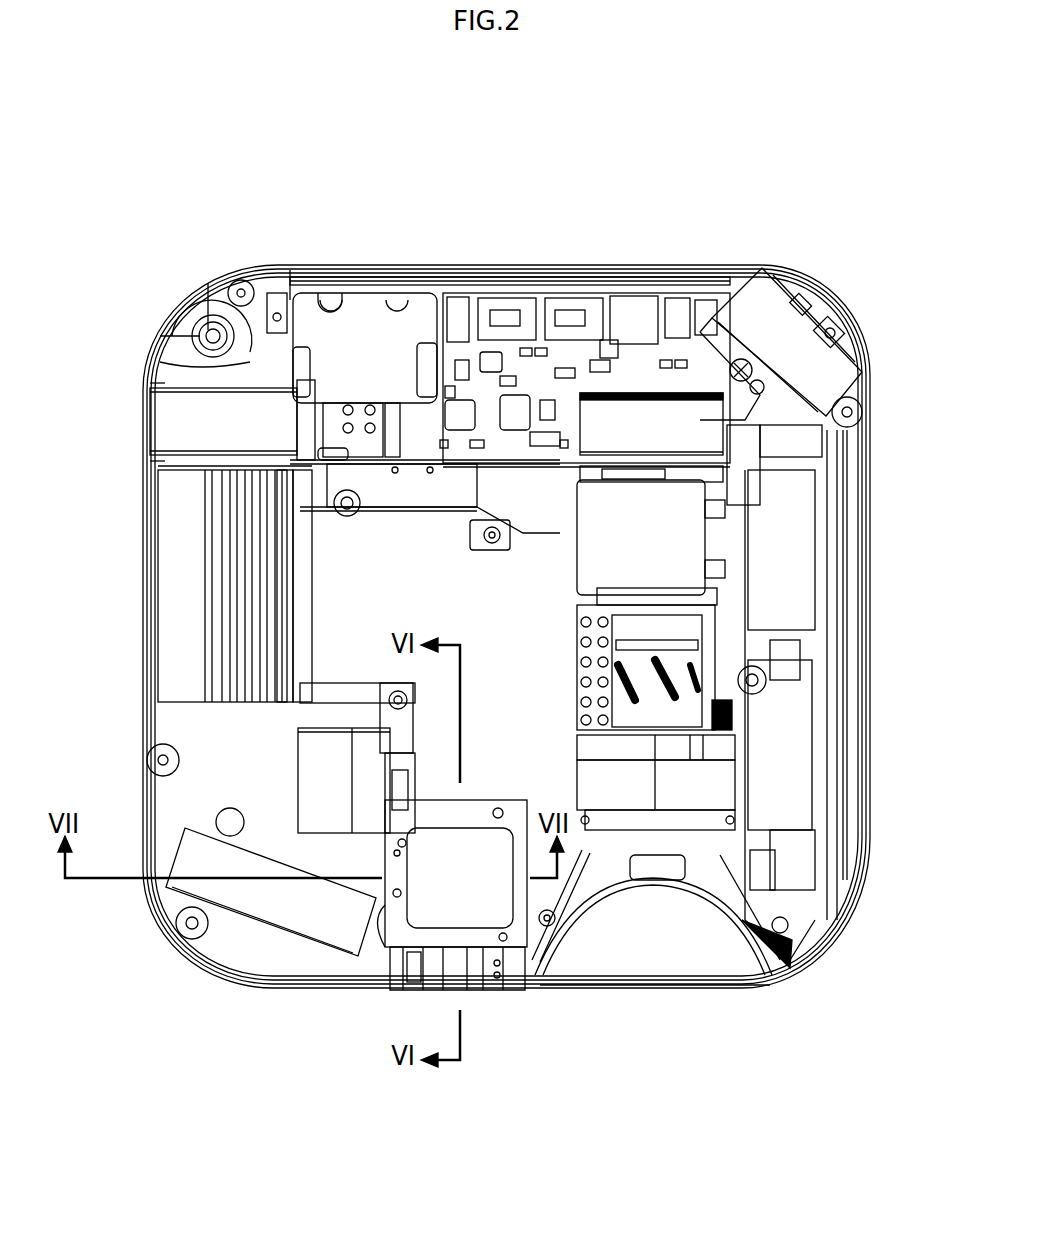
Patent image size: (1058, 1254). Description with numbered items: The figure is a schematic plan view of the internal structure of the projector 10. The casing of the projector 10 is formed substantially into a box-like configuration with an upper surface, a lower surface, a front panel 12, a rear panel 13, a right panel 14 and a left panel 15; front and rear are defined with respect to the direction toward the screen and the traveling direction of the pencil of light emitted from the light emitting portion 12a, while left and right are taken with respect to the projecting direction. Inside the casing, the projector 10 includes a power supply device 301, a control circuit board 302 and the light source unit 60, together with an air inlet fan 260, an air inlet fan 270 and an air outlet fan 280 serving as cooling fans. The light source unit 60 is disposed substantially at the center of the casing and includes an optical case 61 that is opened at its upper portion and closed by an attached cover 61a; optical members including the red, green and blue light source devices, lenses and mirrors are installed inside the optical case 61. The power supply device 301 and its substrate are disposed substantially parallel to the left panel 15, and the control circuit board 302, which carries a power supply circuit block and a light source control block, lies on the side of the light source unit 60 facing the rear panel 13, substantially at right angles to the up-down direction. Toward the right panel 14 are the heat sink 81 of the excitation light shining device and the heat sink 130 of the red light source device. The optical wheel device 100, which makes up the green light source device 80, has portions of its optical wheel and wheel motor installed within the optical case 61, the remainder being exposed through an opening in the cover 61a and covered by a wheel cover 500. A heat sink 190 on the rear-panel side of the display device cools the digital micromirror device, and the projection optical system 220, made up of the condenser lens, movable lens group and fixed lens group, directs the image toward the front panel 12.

The projector 10 is at (504, 550).
The front panel 12 is at (637, 970).
The light emitting portion 12a is at (655, 972).
The rear panel 13 is at (503, 235).
The right panel 14 is at (457, 626).
The left panel 15 is at (897, 655).
The light source unit 60 is at (304, 606).
The optical case 61 is at (367, 343).
The cover 61a is at (425, 355).
The heat sink 81 is at (180, 584).
The optical wheel device 100 is at (379, 1004).
The green light source device 80 is at (414, 967).
The heat sink 130 is at (228, 770).
The heat sink 190 is at (651, 326).
The projection optical system 220 is at (766, 655).
The air inlet fan 260 is at (263, 945).
The air inlet fan 270 is at (178, 420).
The air outlet fan 280 is at (781, 298).
The power supply device 301 is at (847, 715).
The control circuit board 302 is at (585, 318).
The wheel cover 500 is at (427, 945).